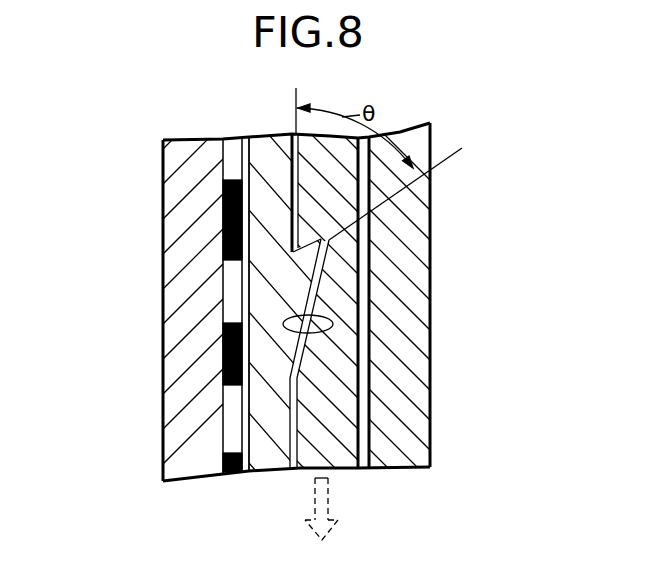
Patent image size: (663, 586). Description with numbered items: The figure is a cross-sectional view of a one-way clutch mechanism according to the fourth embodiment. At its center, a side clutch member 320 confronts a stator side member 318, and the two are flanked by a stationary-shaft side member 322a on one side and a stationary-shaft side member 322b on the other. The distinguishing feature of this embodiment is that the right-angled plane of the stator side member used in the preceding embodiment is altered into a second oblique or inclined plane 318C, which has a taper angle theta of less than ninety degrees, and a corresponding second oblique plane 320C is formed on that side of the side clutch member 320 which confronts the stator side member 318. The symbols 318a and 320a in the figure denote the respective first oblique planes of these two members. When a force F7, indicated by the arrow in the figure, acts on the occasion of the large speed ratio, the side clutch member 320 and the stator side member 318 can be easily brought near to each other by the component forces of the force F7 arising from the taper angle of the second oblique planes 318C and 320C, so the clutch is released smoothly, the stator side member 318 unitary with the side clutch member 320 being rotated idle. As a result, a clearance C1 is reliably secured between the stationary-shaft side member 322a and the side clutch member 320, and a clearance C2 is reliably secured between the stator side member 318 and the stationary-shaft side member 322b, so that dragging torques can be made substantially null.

The stator side member 318 is at (340, 378).
The first oblique plane 318a is at (335, 321).
The second oblique plane 318C is at (313, 226).
The side clutch member 320 is at (270, 170).
The first oblique plane 320a is at (305, 338).
The second oblique plane 320C is at (318, 254).
The stationary-shaft side member 322a is at (190, 320).
The stationary-shaft side member 322b is at (410, 275).
The clearance C1 is at (280, 430).
The clearance C2 is at (330, 427).
The force F7 is at (330, 500).